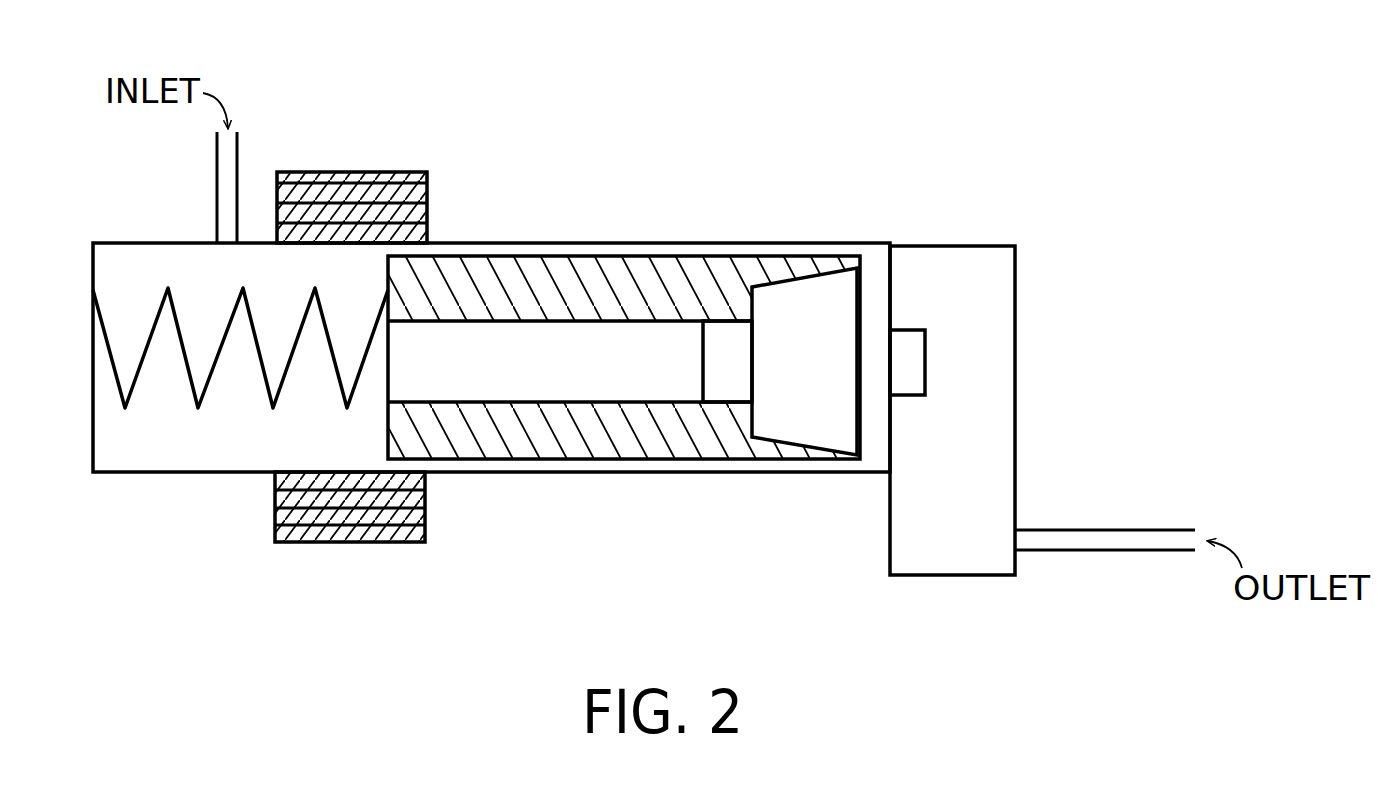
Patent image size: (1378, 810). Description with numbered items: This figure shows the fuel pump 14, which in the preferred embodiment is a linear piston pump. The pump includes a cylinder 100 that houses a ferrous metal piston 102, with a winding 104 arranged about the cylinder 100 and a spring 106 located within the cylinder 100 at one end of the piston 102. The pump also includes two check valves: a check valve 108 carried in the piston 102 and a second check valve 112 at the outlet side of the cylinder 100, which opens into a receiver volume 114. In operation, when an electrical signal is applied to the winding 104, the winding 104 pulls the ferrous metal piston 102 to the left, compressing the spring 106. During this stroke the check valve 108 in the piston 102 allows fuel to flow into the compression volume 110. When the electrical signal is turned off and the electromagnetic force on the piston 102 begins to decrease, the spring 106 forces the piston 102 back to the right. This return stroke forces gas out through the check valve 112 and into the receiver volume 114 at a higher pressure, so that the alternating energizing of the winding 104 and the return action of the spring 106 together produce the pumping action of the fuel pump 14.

The fuel pump 14 is at (985, 84).
The cylinder 100 is at (547, 474).
The piston 102 is at (557, 277).
The winding 104 is at (333, 522).
The spring 106 is at (198, 412).
The check valve 108 is at (728, 392).
The compression volume 110 is at (818, 297).
The check valve 112 is at (905, 340).
The receiver volume 114 is at (1007, 291).